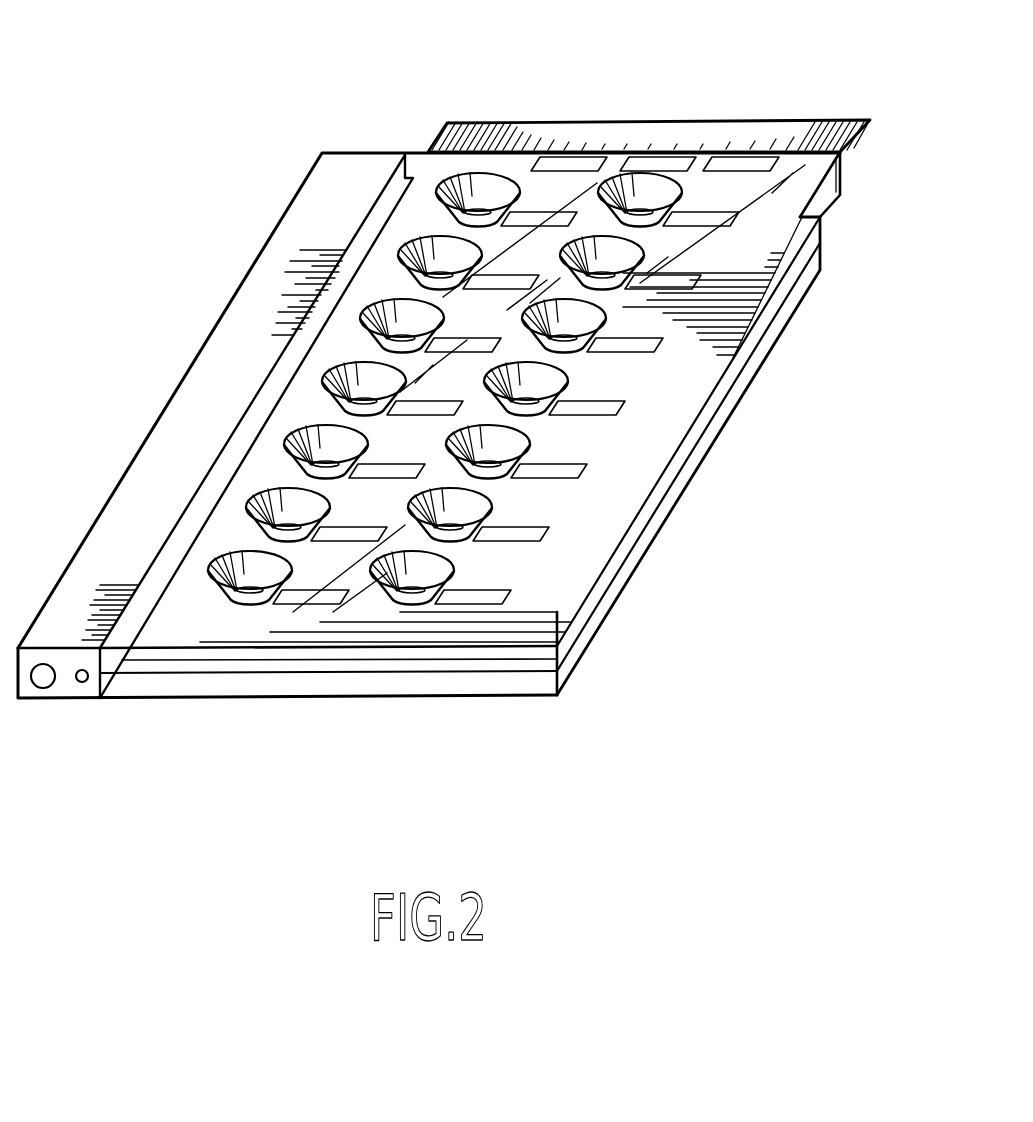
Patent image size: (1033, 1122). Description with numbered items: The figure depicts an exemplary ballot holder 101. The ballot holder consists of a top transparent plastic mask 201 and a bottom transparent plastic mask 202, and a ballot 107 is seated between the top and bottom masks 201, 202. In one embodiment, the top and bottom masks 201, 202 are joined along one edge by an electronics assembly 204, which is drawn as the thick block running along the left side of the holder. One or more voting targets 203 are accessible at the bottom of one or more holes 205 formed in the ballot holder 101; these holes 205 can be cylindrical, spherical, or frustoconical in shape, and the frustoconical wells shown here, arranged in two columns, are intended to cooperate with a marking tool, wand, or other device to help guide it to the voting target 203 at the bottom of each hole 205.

The ballot holder 101 is at (237, 100).
The ballot 107 is at (838, 120).
The top transparent plastic mask 201 is at (600, 590).
The bottom transparent plastic mask 202 is at (575, 668).
The voting target 203 is at (407, 590).
The electronics assembly 204 is at (84, 537).
The hole 205 is at (380, 587).